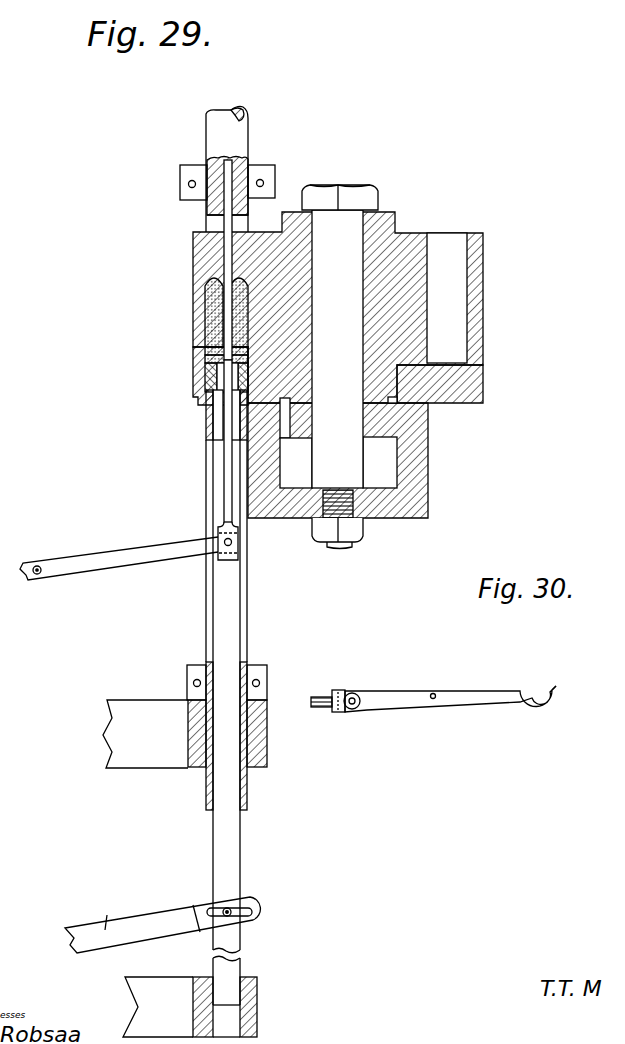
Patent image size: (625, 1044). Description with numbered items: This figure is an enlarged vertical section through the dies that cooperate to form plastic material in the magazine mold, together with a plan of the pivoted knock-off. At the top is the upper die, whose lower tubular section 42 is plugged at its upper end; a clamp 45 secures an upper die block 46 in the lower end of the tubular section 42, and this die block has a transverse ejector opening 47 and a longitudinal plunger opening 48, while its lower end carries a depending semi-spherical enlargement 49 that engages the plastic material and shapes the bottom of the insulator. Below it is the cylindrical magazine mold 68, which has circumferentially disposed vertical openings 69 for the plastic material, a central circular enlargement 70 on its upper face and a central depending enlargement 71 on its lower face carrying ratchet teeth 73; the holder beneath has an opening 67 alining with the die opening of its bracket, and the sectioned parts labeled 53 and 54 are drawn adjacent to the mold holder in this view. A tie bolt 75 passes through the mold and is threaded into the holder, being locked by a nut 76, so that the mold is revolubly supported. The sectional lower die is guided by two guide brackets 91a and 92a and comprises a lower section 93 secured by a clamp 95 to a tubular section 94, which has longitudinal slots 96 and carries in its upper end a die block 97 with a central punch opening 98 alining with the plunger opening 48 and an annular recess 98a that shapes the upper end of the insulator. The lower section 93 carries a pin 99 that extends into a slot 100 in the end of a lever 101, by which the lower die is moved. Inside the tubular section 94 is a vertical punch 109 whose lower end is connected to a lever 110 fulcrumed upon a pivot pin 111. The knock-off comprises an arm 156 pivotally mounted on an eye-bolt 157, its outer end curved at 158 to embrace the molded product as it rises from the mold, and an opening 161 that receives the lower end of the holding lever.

In FIG. 29, the lower tubular section of the upper die 42 is at (242, 130).
In FIG. 29, the clamp 45 is at (186, 167).
In FIG. 29, the upper die block 46 is at (207, 210).
In FIG. 29, the transverse ejector opening 47 is at (207, 224).
In FIG. 29, the longitudinal plunger opening 48 is at (231, 168).
In FIG. 29, the semi-spherical enlargement 49 is at (216, 285).
In FIG. 29, the lower body of valve casing 53 is at (418, 477).
In FIG. 29, the flange plate 54 is at (452, 382).
In FIG. 29, the holder opening 67 is at (198, 400).
In FIG. 29, the cylindrical magazine mold 68 is at (405, 248).
In FIG. 29, the vertical openings 69 is at (447, 298).
In FIG. 29, the central circular enlargement 70 is at (386, 207).
In FIG. 29, the central depending enlargement 71 is at (377, 438).
In FIG. 29, the ratchet teeth 73 is at (285, 432).
In FIG. 29, the tie bolt 75 is at (337, 364).
In FIG. 29, the nut 76 is at (361, 541).
In FIG. 29, the guide bracket 91a is at (267, 743).
In FIG. 29, the guide bracket 92a is at (257, 980).
In FIG. 29, the lower die section 93 is at (240, 858).
In FIG. 29, the tubular section of the lower die 94 is at (243, 628).
In FIG. 29, the clamp 95 is at (268, 668).
In FIG. 29, the longitudinal slots 96 is at (210, 572).
In FIG. 29, the lower die block 97 is at (205, 375).
In FIG. 29, the central punch opening 98 is at (206, 359).
In FIG. 29, the annular recess 98a is at (205, 352).
In FIG. 29, the pin 99 is at (225, 908).
In FIG. 29, the slot 100 is at (262, 912).
In FIG. 29, the lever 101 is at (104, 914).
In FIG. 29, the vertical punch 109 is at (228, 476).
In FIG. 29, the lever 110 is at (103, 556).
In FIG. 29, the pivot pin 111 is at (36, 566).
In FIG. 30, the knock-off arm 156 is at (455, 698).
In FIG. 30, the eye-bolt 157 is at (340, 712).
In FIG. 30, the curved end 158 is at (560, 690).
In FIG. 30, the opening 161 is at (434, 693).